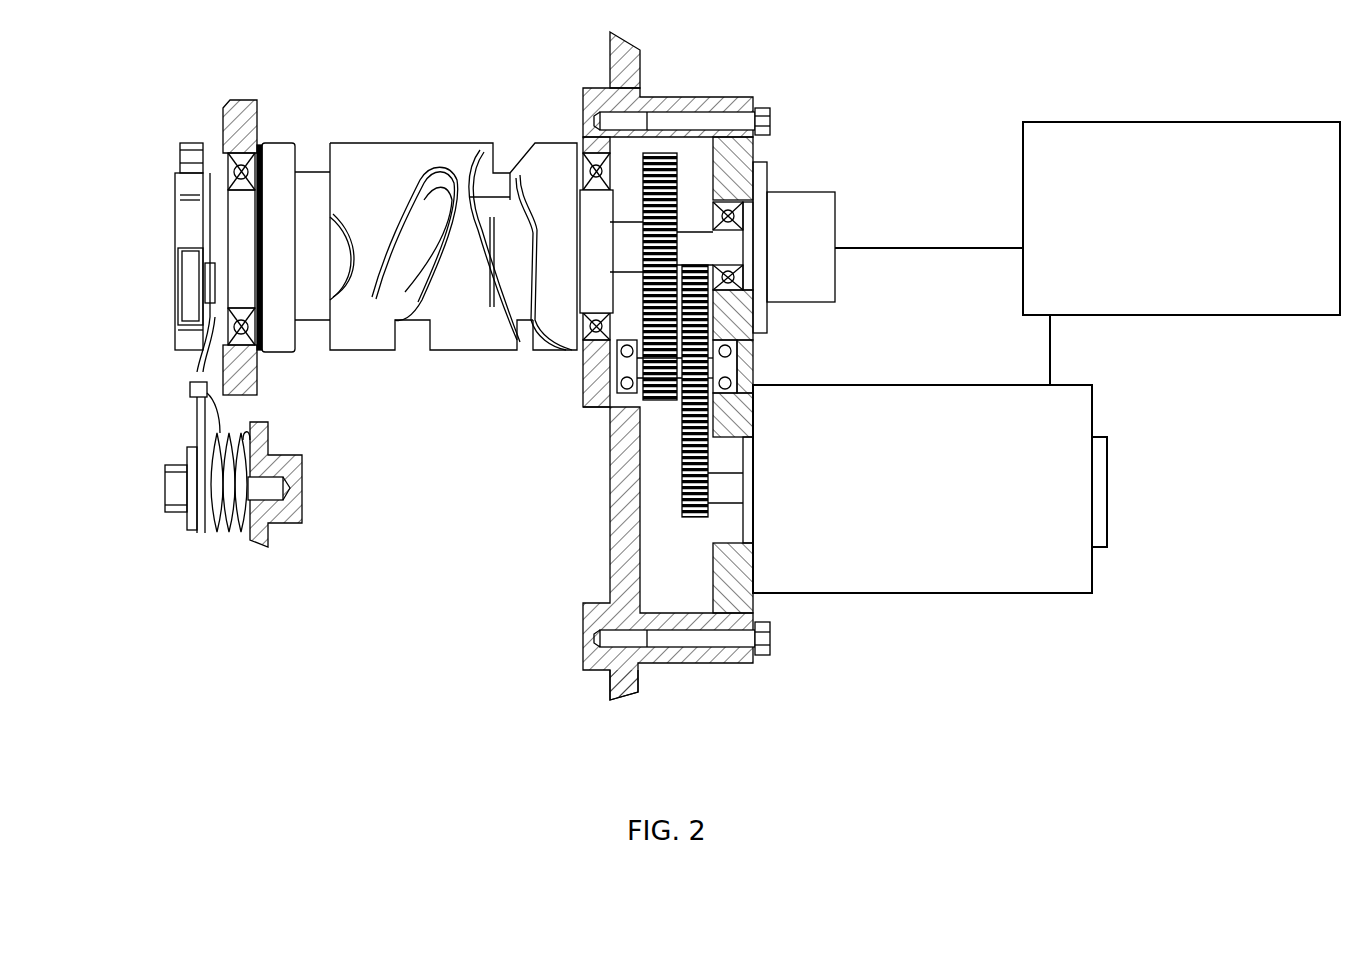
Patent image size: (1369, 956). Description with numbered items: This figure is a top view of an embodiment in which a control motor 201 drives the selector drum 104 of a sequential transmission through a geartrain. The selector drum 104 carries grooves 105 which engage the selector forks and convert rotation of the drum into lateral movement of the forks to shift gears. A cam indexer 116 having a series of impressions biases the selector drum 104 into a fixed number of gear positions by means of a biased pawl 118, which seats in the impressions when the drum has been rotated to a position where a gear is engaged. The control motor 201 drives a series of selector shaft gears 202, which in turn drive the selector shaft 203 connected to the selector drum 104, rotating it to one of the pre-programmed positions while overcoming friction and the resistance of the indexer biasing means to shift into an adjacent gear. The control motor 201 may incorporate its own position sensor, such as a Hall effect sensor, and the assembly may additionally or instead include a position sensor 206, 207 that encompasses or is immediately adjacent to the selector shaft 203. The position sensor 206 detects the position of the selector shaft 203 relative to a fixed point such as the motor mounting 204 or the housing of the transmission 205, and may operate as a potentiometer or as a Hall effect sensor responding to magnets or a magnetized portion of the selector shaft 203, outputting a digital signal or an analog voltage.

The selector drum 104 is at (411, 143).
The grooves 105 is at (415, 322).
The cam indexer 116 is at (150, 429).
The biased pawl 118 is at (193, 372).
The control motor 201 is at (932, 492).
The selector shaft gears 202 is at (657, 455).
The selector shaft 203 is at (628, 220).
The motor mounting 204 is at (732, 663).
The housing of the transmission 205 is at (640, 680).
The position sensor 206 is at (1191, 224).
The position sensor 207 is at (813, 192).